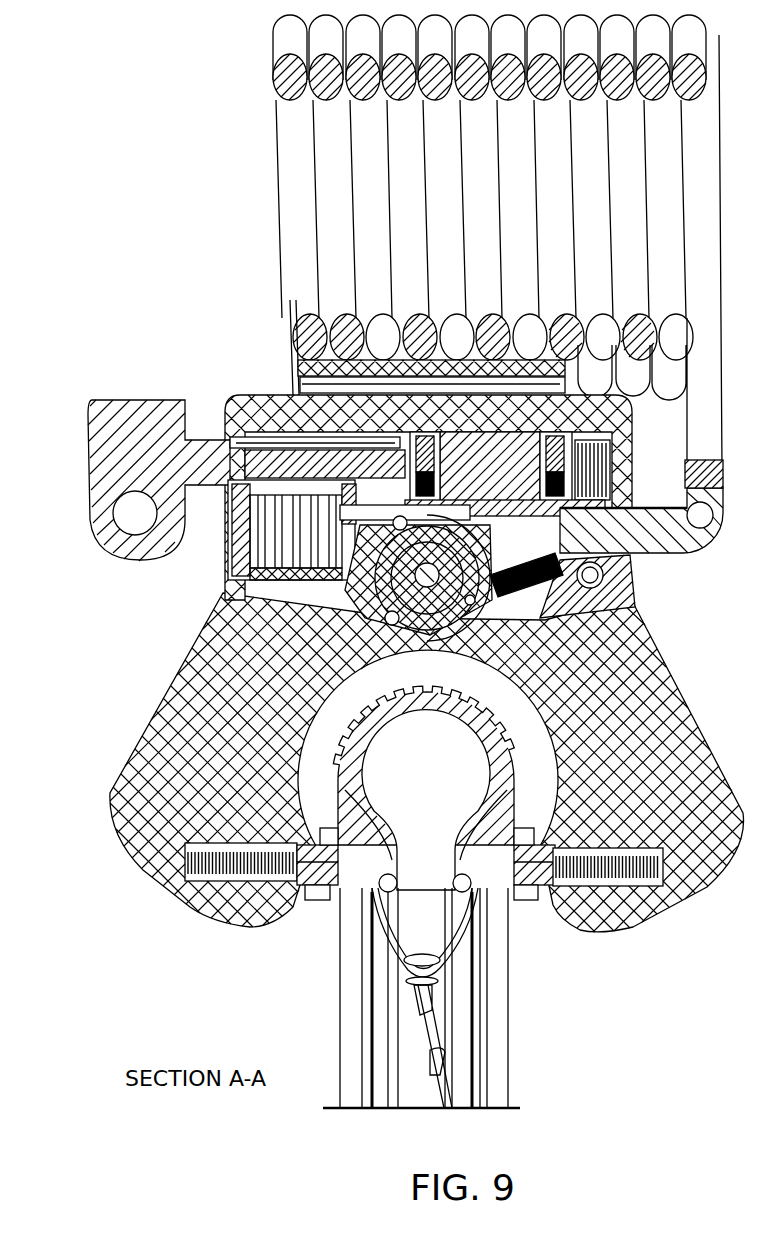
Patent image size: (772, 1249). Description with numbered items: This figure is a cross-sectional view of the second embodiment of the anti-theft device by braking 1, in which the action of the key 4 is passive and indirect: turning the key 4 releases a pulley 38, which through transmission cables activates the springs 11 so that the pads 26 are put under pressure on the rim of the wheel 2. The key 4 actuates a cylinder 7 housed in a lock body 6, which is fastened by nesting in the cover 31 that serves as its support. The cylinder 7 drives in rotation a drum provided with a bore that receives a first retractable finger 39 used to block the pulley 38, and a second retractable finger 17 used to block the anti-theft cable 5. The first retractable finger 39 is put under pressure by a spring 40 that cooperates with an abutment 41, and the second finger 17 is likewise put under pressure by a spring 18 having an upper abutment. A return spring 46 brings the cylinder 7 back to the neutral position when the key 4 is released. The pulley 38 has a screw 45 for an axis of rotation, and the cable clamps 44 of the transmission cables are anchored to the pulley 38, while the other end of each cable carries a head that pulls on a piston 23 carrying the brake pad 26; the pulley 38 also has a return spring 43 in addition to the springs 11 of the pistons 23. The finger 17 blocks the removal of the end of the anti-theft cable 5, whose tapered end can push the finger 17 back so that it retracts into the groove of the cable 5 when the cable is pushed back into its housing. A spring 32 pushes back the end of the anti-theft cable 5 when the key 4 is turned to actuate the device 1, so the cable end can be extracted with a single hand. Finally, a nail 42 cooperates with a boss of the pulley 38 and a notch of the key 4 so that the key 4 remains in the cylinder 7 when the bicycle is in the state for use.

The anti-theft device by braking 1 is at (146, 656).
The wheel 2 is at (500, 1010).
The key 4 is at (122, 540).
The anti-theft cable 5 is at (298, 263).
The lock body 6 is at (232, 548).
The cylinder 7 is at (235, 490).
The springs 11 is at (222, 882).
The second retractable finger 17 is at (507, 523).
The spring 18 is at (580, 478).
The piston 23 is at (330, 890).
The brake pad 26 is at (492, 885).
The cover 31 is at (650, 690).
The spring 32 is at (630, 567).
The pulley 38 is at (238, 590).
The first retractable finger 39 is at (400, 477).
The spring 40 is at (450, 500).
The abutment 41 is at (443, 480).
The nail 42 is at (226, 462).
The return spring 43 is at (540, 600).
The cable clamps 44 is at (425, 612).
The screw 45 is at (485, 640).
The return spring 46 is at (570, 458).